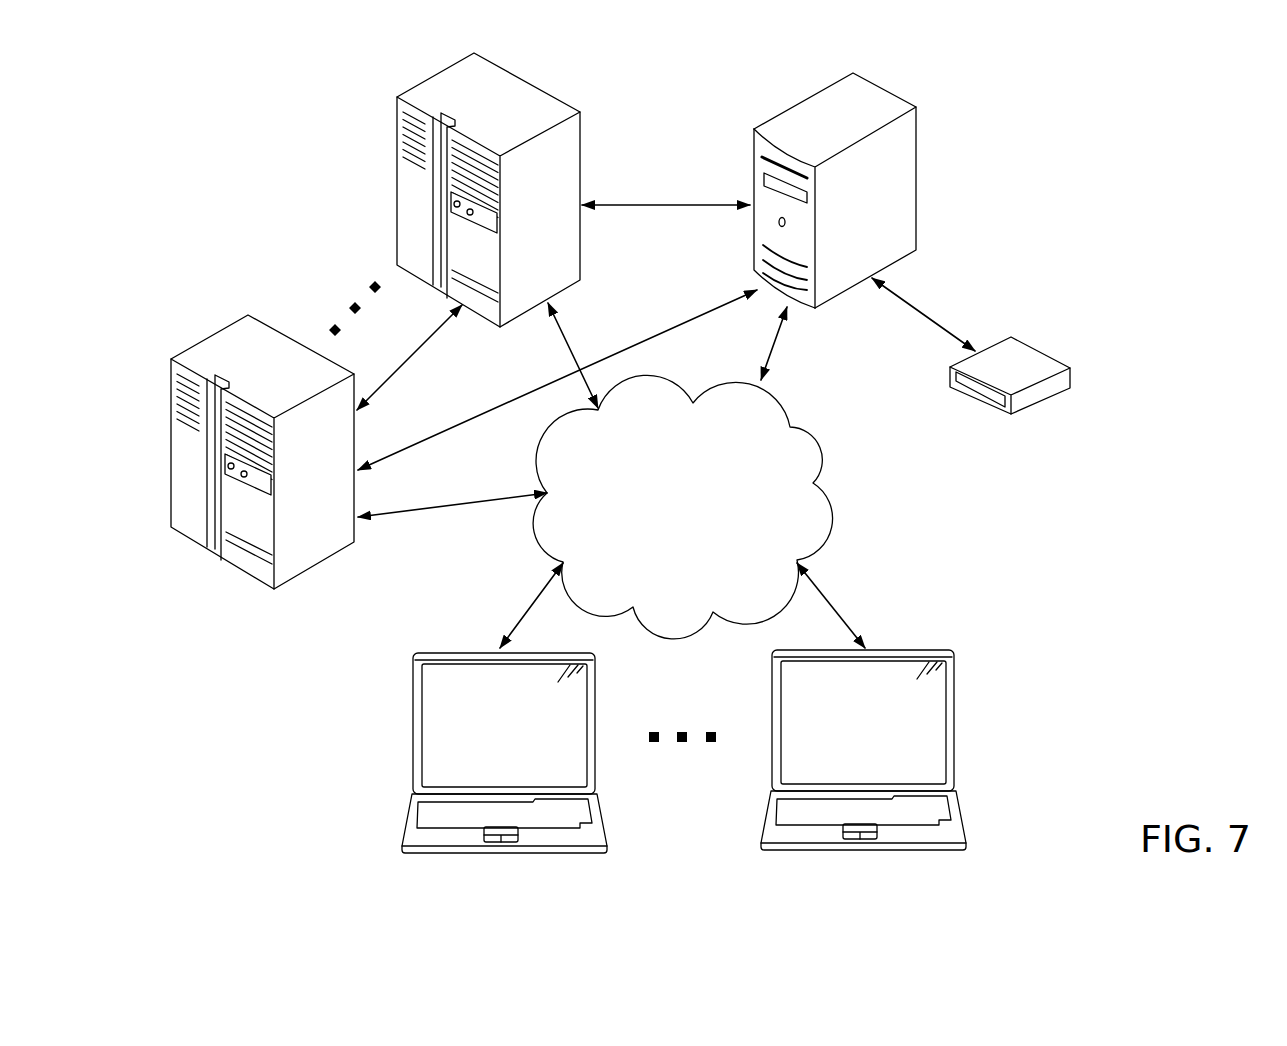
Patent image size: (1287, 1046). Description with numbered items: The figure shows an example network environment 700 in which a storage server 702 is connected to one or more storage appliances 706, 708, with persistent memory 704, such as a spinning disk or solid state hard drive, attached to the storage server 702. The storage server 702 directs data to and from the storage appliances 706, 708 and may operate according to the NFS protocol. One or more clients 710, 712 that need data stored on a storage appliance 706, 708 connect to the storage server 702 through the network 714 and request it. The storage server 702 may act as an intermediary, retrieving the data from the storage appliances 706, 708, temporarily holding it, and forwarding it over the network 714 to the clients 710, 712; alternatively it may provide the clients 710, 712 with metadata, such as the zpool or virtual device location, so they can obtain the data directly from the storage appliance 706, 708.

The network environment 700 is at (263, 184).
The storage server 702 is at (916, 173).
The persistent memory 704 is at (1032, 403).
The storage appliance 706 is at (580, 143).
The storage appliance 708 is at (247, 573).
The client 710 is at (413, 713).
The client 712 is at (953, 703).
The network 714 is at (665, 529).